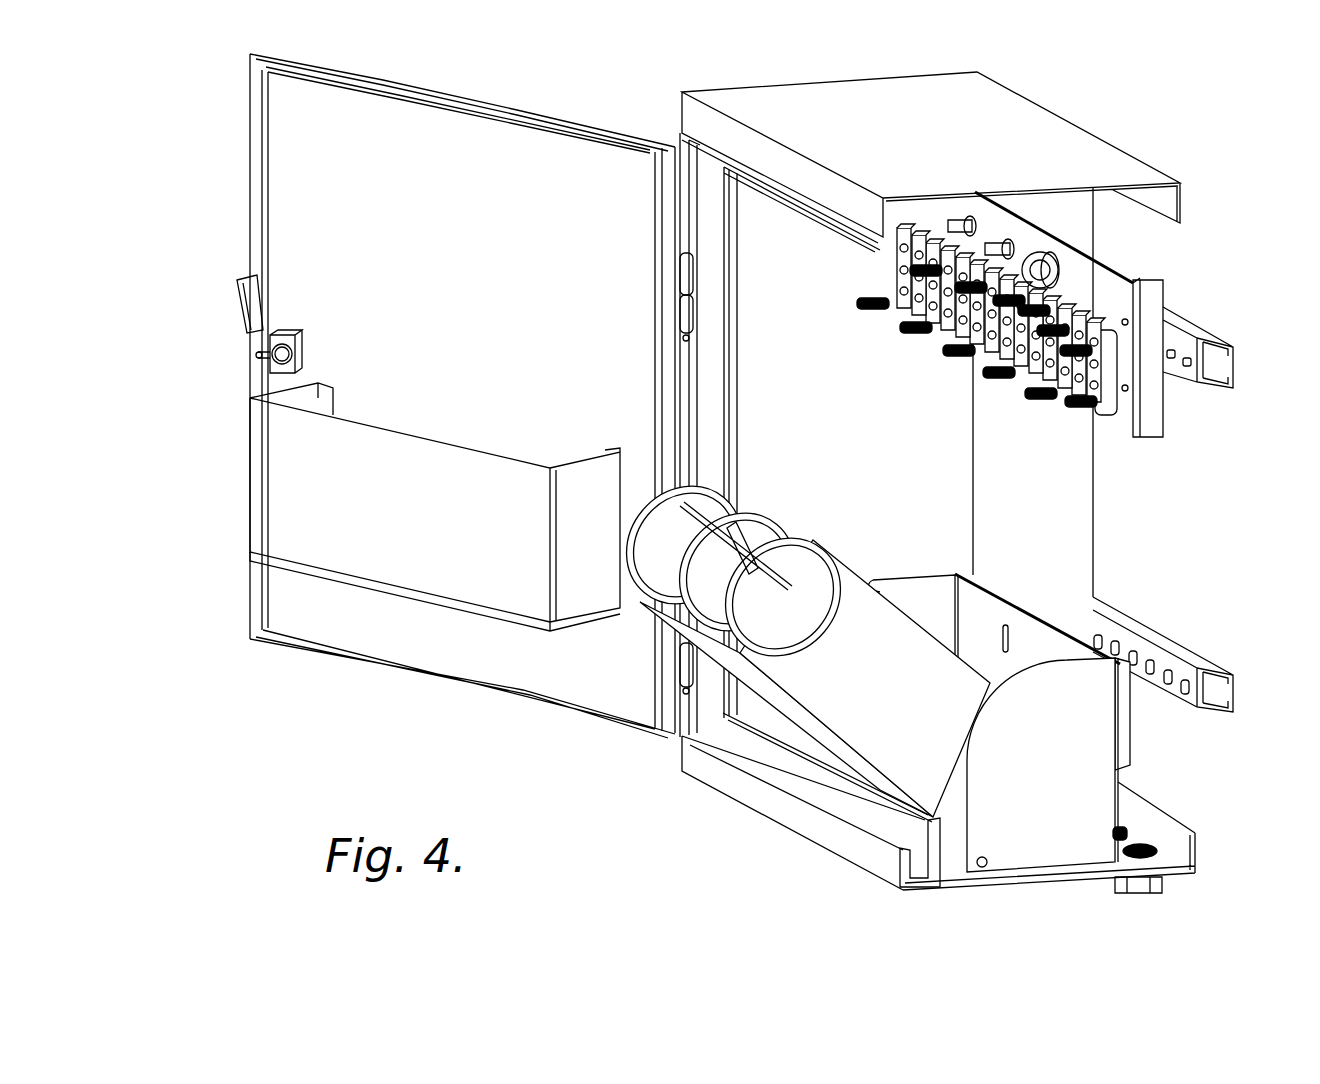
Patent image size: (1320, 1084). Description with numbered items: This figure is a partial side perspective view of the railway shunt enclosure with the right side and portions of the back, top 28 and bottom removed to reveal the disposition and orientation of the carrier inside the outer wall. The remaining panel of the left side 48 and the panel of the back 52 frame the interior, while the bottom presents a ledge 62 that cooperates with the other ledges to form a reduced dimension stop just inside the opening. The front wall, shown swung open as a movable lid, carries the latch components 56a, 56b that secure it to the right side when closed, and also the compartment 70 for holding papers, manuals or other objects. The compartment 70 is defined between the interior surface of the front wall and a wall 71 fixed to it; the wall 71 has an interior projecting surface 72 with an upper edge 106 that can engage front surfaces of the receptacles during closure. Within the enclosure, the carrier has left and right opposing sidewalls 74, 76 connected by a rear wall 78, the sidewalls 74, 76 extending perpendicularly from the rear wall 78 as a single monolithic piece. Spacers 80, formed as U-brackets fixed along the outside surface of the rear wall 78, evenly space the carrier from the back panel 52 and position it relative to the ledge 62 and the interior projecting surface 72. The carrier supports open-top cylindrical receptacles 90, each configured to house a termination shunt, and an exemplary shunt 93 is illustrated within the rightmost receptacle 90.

The top 28 is at (1134, 146).
The planar panel of the left side 48 is at (787, 260).
The panel of the back 52 is at (1078, 455).
The latch component 56a is at (292, 346).
The latch component 56b is at (248, 285).
The ledge 62 is at (933, 832).
The compartment 70 is at (376, 410).
The wall 71 is at (340, 524).
The interior projecting surface 72 is at (451, 500).
The left sidewall 74 is at (922, 584).
The right sidewall 76 is at (1078, 775).
The rear wall 78 is at (994, 613).
The spacers 80 is at (1123, 720).
The receptacles 90 is at (870, 735).
The shunt 93 is at (808, 537).
The upper edge 106 is at (440, 438).